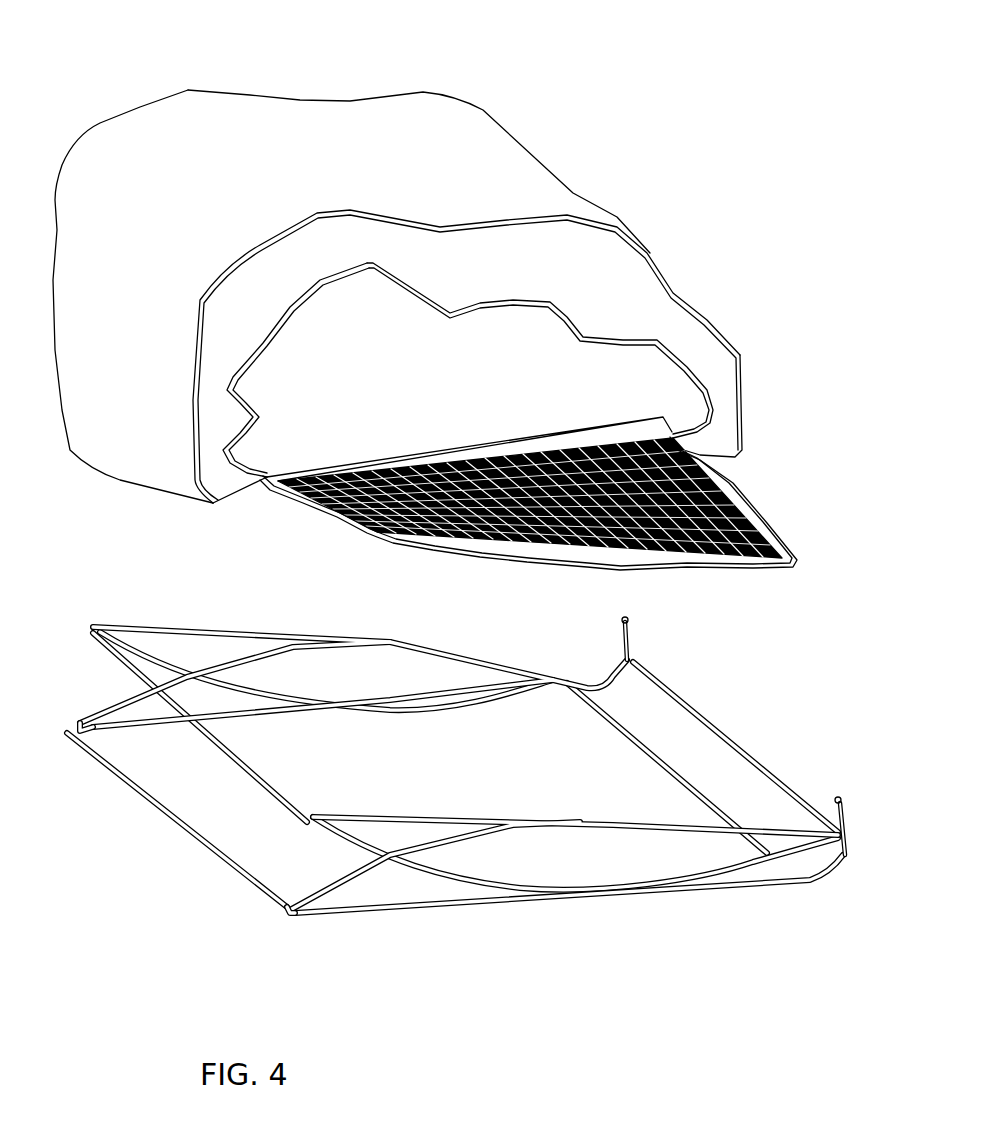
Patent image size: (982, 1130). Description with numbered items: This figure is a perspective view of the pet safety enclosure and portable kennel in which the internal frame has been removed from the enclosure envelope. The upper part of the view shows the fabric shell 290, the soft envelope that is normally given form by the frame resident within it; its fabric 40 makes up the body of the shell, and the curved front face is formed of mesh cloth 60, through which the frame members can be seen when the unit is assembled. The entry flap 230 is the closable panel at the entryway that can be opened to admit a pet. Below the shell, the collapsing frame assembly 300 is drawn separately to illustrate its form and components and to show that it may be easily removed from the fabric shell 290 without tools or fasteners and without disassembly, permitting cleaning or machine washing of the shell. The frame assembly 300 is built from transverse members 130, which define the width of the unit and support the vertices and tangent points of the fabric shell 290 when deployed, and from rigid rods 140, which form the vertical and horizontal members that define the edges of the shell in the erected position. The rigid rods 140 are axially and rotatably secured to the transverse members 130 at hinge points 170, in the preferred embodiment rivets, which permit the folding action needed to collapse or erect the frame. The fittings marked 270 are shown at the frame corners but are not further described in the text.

The mesh cloth 60 is at (212, 115).
The fabric 40 is at (697, 305).
The fabric shell 290 is at (580, 250).
The entry flap 230 is at (367, 530).
The transverse member 130 is at (150, 812).
The rigid rod 140 is at (430, 818).
The collapsing frame assembly 300 is at (638, 890).
The elbow connectors 270 is at (843, 833).
The hinge point 170 is at (637, 660).